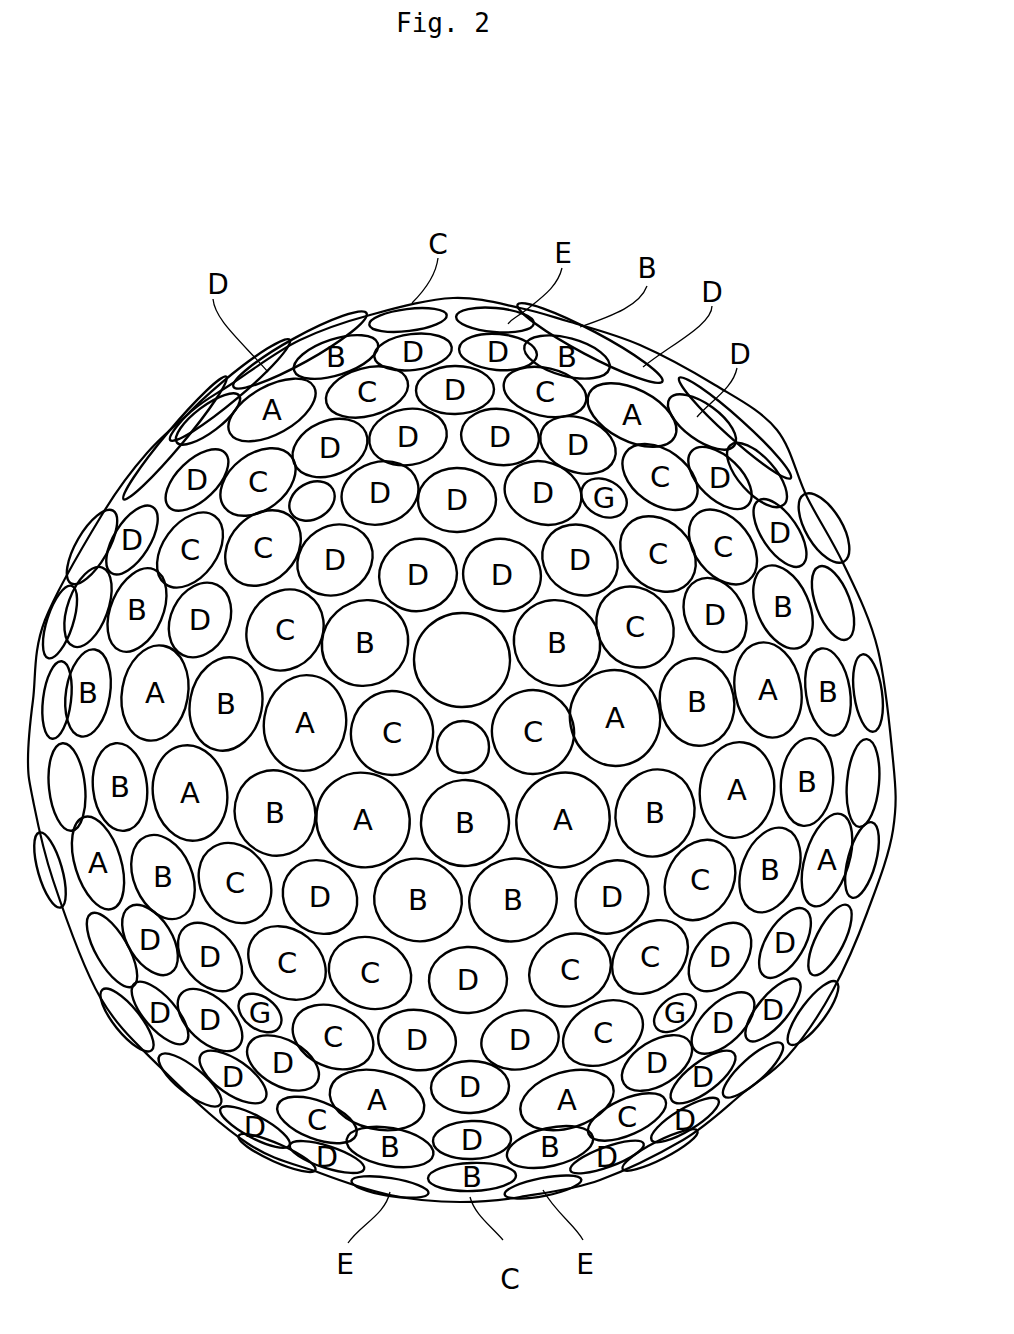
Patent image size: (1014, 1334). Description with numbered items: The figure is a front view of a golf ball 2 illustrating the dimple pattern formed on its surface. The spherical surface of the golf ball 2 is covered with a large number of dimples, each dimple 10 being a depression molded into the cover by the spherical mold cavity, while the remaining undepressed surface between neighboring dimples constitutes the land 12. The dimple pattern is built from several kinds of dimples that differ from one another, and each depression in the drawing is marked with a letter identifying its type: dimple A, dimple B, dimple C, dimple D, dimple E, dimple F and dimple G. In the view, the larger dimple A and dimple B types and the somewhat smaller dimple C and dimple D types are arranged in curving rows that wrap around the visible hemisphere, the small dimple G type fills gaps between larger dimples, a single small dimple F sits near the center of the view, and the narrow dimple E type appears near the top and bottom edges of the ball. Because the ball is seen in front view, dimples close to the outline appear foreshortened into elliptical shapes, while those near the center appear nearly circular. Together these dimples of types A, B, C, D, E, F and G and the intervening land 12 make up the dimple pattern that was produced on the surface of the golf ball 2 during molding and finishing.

The golf ball 2 is at (780, 417).
The dimple 10 is at (818, 570).
The land 12 is at (745, 1055).
The dimple A is at (462, 660).
The dimple B is at (333, 327).
The dimple C is at (488, 302).
The dimple D is at (207, 423).
The dimple E is at (410, 318).
The dimple F is at (463, 747).
The dimple G is at (312, 500).